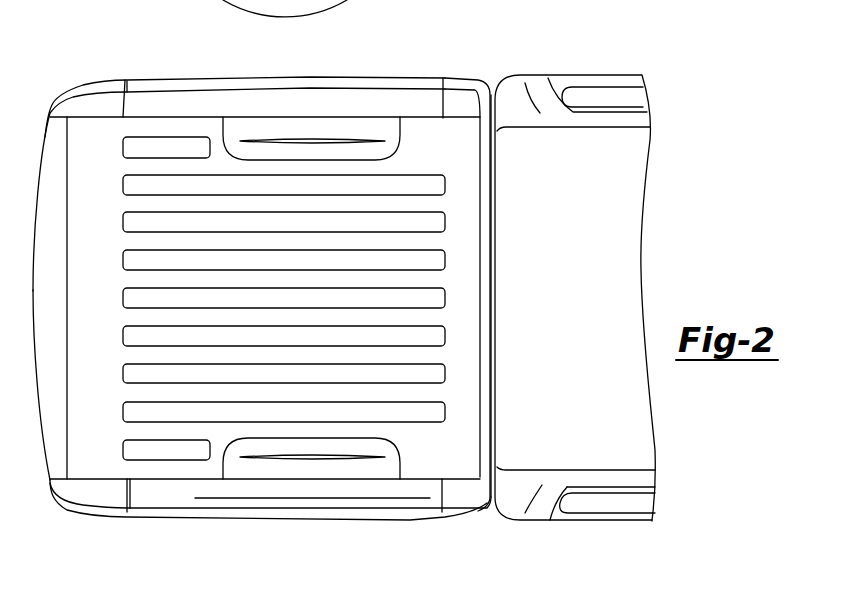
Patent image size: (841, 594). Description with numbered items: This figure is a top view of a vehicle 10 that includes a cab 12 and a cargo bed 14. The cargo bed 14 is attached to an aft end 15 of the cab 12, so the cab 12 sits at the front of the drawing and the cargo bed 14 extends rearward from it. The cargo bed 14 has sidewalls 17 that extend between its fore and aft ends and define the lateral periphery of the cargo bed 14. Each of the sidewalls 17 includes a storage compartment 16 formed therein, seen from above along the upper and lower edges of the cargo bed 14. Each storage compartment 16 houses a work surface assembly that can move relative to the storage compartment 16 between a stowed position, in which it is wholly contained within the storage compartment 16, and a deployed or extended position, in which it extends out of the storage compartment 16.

The vehicle 10 is at (534, 43).
The cab 12 is at (628, 67).
The cargo bed 14 is at (117, 74).
The aft end 15 is at (493, 87).
The storage compartment 16 is at (314, 76).
The sidewall 17 is at (463, 100).